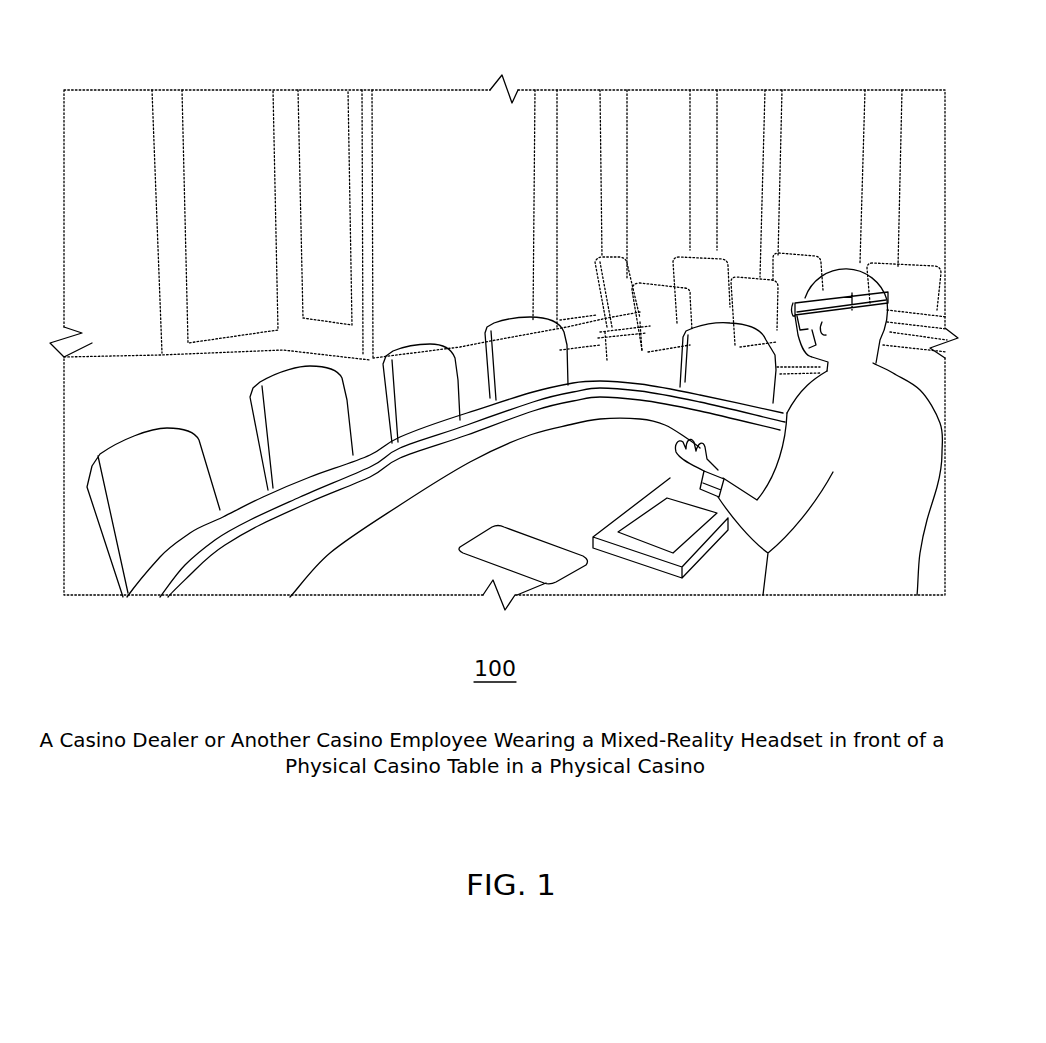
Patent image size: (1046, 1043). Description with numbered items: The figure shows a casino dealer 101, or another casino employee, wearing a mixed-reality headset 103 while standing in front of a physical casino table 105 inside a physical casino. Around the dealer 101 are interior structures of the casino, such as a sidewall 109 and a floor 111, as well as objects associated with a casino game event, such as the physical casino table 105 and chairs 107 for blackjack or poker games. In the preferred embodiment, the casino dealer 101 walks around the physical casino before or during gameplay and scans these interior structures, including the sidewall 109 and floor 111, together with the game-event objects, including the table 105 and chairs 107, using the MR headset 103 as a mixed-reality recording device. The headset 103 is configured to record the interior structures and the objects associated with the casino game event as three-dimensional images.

The casino dealer 101 is at (808, 432).
The mixed-reality (MR) headset 103 is at (812, 297).
The physical casino table 105 is at (456, 489).
The chair 107 is at (526, 358).
The sidewall 109 is at (505, 232).
The floor 111 is at (153, 487).